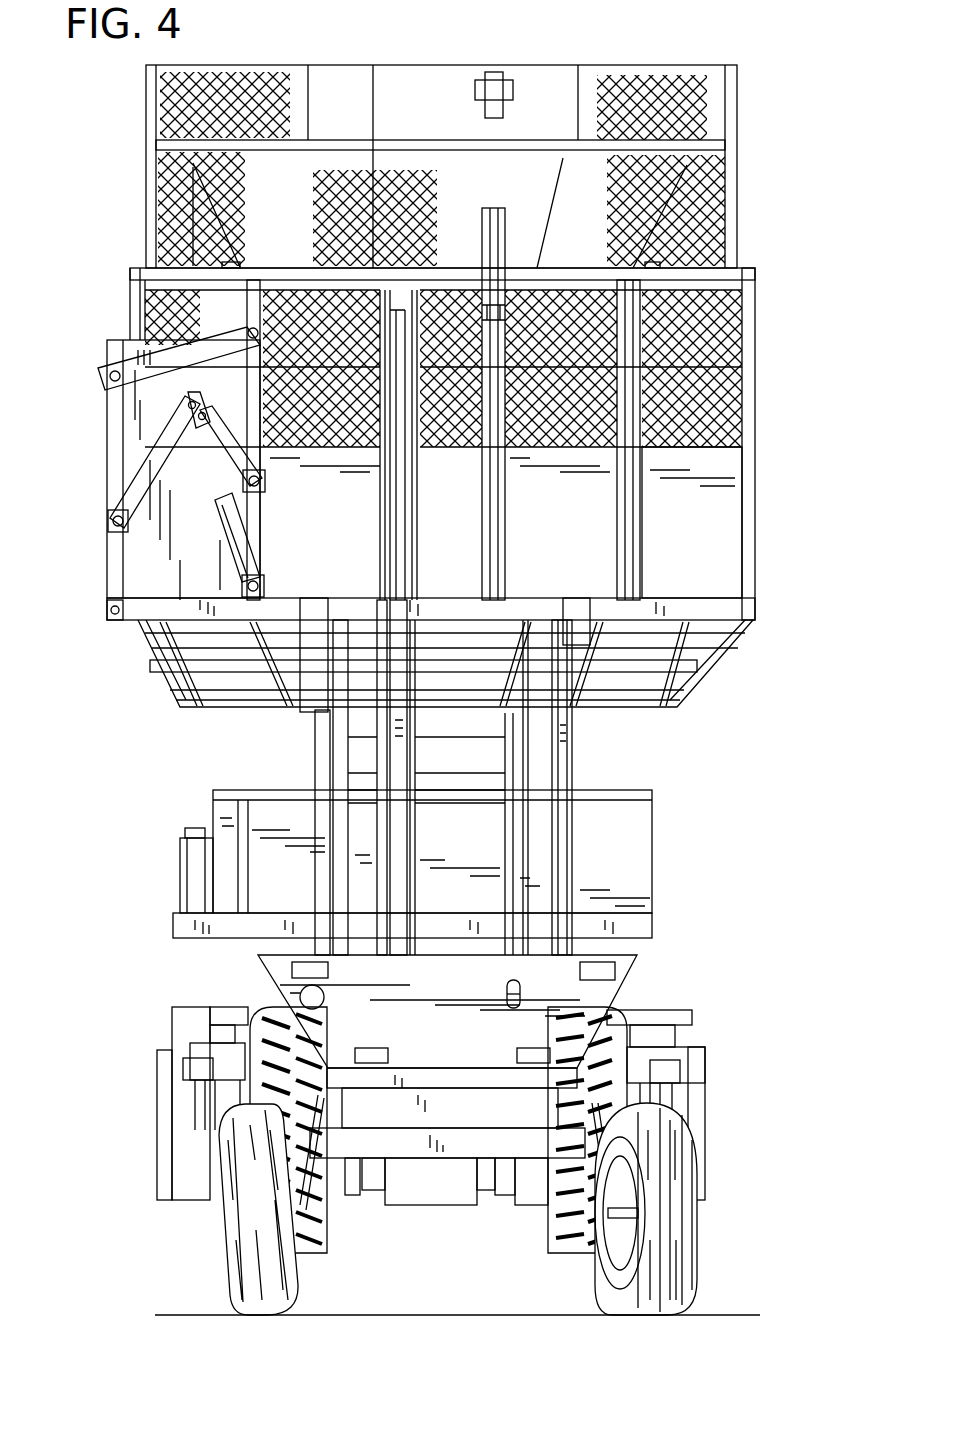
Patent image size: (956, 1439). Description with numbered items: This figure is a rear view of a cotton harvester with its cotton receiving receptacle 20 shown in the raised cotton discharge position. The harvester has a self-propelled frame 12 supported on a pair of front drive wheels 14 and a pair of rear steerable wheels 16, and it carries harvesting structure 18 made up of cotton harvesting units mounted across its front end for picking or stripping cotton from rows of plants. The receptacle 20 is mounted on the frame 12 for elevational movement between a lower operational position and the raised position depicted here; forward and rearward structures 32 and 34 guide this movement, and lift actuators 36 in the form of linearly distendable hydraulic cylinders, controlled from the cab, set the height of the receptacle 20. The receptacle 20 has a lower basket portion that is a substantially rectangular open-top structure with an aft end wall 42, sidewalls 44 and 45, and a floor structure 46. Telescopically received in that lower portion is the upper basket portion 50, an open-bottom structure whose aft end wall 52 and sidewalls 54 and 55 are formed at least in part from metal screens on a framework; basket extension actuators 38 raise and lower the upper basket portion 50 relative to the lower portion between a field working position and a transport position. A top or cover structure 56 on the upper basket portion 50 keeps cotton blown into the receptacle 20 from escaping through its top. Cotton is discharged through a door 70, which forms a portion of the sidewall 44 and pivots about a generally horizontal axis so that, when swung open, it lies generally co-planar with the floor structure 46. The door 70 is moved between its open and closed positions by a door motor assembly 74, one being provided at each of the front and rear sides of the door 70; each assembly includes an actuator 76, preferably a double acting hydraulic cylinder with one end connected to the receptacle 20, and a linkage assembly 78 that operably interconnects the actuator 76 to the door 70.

The self-propelled frame 12 is at (458, 1052).
The front drive wheels 14 is at (305, 1240).
The rear steerable wheels 16 is at (236, 1265).
The harvesting structure 18 is at (152, 1162).
The cotton receiving receptacle 20 is at (784, 312).
The forward structure 32 is at (578, 758).
The rearward structure 34 is at (314, 757).
The lift actuators 36 is at (372, 723).
The basket extension actuators 38 is at (510, 220).
The aft end wall 42 is at (732, 470).
The sidewall 44 is at (130, 304).
The sidewall 45 is at (757, 356).
The floor structure 46 is at (682, 636).
The upper basket portion 50 is at (662, 185).
The aft end wall 52 is at (208, 222).
The sidewall 54 is at (150, 168).
The sidewall 55 is at (738, 226).
The top or cover structure 56 is at (668, 68).
The door 70 is at (110, 428).
The door motor assembly 74 is at (150, 545).
The actuator 76 is at (240, 560).
The linkage assembly 78 is at (140, 478).